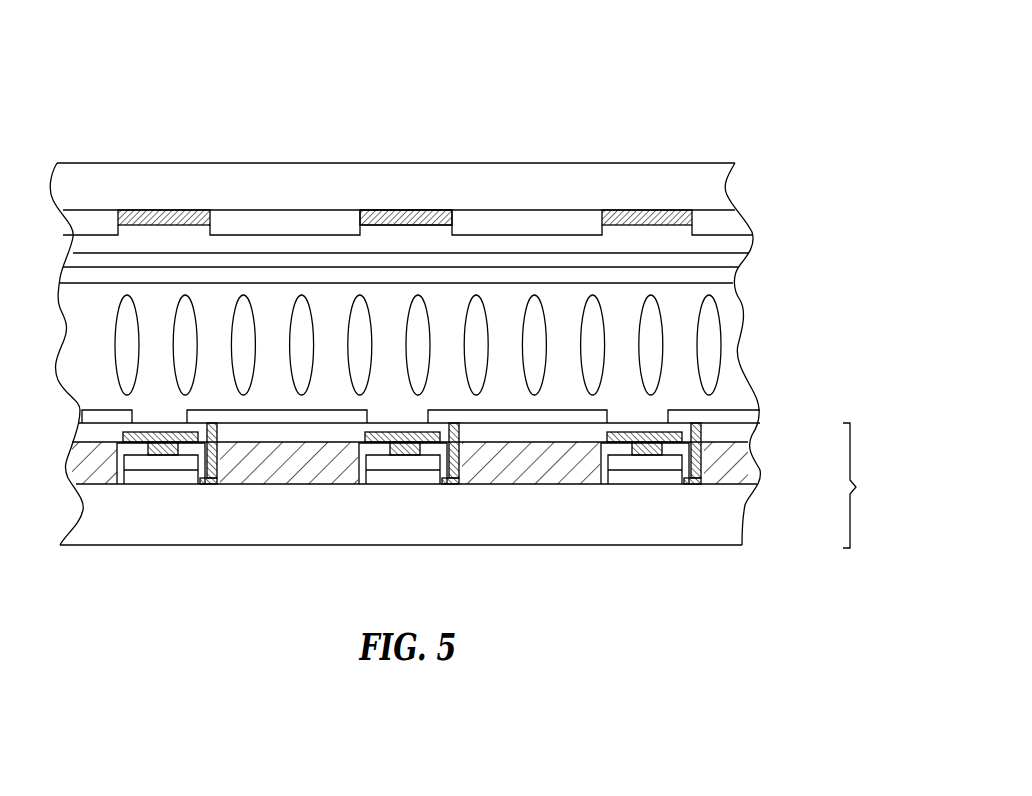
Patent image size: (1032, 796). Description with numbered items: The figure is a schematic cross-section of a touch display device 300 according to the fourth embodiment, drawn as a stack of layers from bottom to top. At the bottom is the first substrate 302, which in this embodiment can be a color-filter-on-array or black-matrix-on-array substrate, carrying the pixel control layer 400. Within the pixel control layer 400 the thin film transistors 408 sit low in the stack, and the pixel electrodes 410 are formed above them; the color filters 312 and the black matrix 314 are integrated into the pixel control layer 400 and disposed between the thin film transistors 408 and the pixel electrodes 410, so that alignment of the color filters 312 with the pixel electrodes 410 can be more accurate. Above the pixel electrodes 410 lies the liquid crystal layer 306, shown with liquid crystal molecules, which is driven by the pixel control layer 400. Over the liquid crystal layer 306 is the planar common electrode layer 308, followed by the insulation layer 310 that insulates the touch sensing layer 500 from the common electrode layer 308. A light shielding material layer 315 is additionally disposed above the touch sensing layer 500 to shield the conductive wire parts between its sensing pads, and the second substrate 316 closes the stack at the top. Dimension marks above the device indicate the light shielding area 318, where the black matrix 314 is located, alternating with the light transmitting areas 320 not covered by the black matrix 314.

The touch display device 300 is at (790, 82).
The first substrate 302 is at (641, 527).
The liquid crystal layer 306 is at (742, 335).
The common electrode layer 308 is at (736, 283).
The insulation layer 310 is at (740, 265).
The color filters 312 is at (730, 468).
The black matrix 314 is at (697, 433).
The light shielding material layer 315 is at (395, 210).
The second substrate 316 is at (730, 193).
The light shielding area 318 is at (222, 117).
The light transmitting areas 320 is at (405, 101).
The pixel control layer 400 is at (876, 485).
The thin film transistors 408 is at (665, 477).
The pixel electrodes 410 is at (760, 404).
The touch sensing layer 500 is at (745, 236).